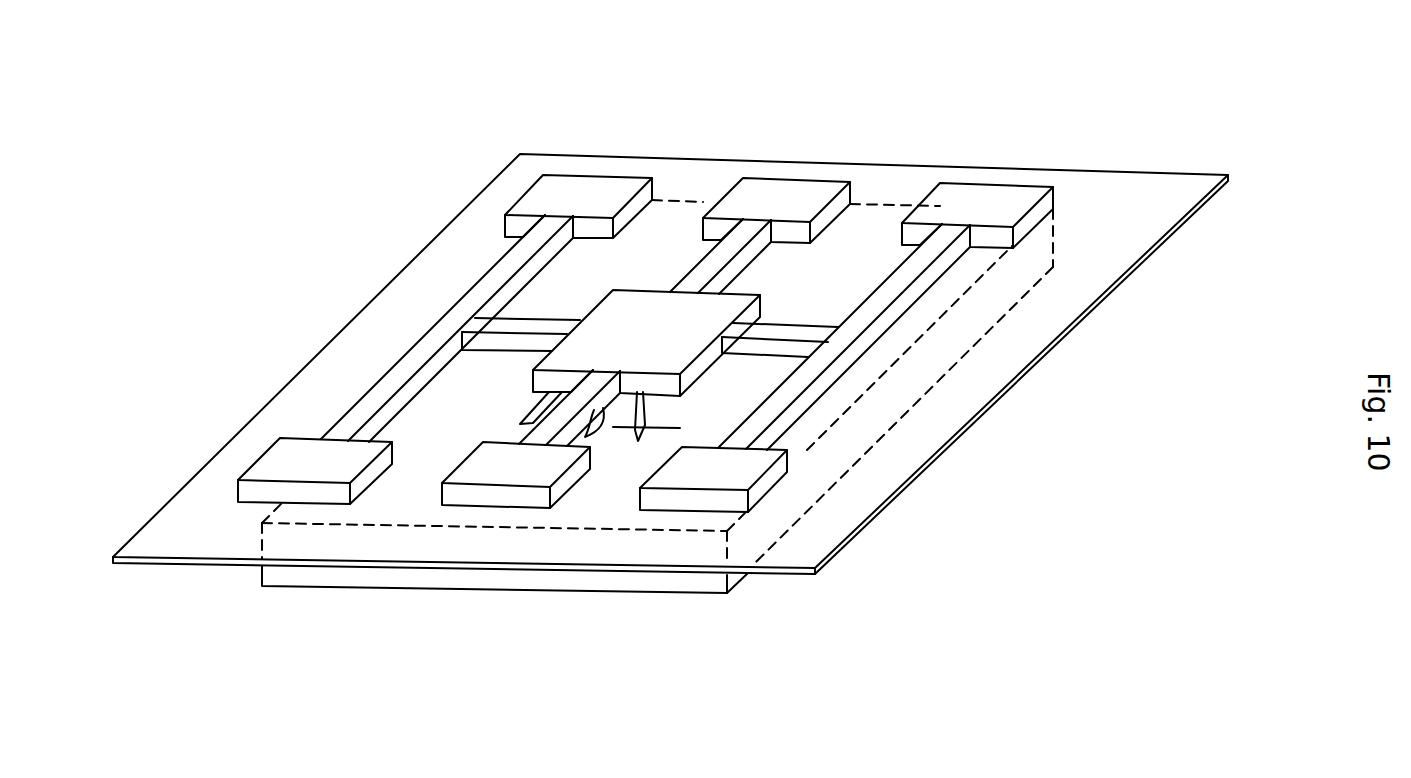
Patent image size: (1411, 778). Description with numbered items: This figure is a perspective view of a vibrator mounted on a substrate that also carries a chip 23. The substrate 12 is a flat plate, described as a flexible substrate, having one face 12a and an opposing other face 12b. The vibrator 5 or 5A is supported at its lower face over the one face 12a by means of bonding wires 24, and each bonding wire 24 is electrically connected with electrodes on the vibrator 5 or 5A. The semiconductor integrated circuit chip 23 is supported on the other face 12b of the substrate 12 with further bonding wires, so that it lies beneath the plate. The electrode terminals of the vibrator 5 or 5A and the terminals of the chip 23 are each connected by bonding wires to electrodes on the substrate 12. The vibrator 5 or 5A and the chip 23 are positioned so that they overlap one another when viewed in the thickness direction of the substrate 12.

The vibrator 5 is at (645, 299).
The vibrator 5A is at (562, 189).
The substrate 12 is at (691, 380).
The one face 12a is at (1194, 170).
The other face 12b is at (802, 574).
The semiconductor integrated circuit chip 23 is at (653, 582).
The bonding wire 24 is at (800, 300).